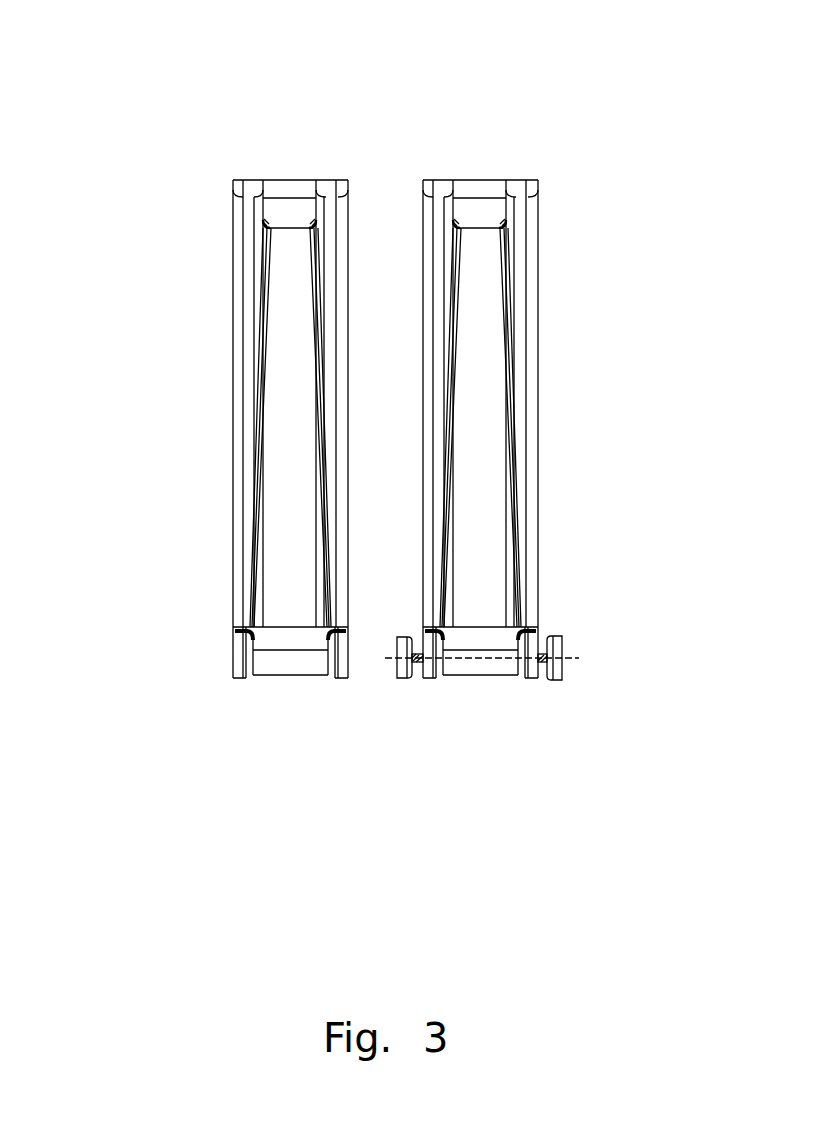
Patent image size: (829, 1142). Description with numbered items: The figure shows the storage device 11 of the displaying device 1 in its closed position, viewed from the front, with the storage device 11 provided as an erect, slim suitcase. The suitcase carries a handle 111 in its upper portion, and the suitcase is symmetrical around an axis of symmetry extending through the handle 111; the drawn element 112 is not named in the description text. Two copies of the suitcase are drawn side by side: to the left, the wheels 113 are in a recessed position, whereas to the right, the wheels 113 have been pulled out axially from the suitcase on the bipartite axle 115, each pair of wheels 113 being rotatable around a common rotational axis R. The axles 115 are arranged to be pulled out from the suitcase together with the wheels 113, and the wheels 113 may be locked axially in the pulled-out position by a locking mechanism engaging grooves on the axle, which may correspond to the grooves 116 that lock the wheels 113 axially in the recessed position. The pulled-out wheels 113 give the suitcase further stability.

The displaying device 1 is at (232, 92).
The storage device 11 is at (233, 290).
The handle 111 is at (290, 180).
The strut / inclined rib 112 is at (288, 412).
The wheels 113 is at (238, 658).
The bipartite axle 115 is at (418, 665).
The grooves 116 is at (418, 650).
The rotational axis R is at (579, 659).